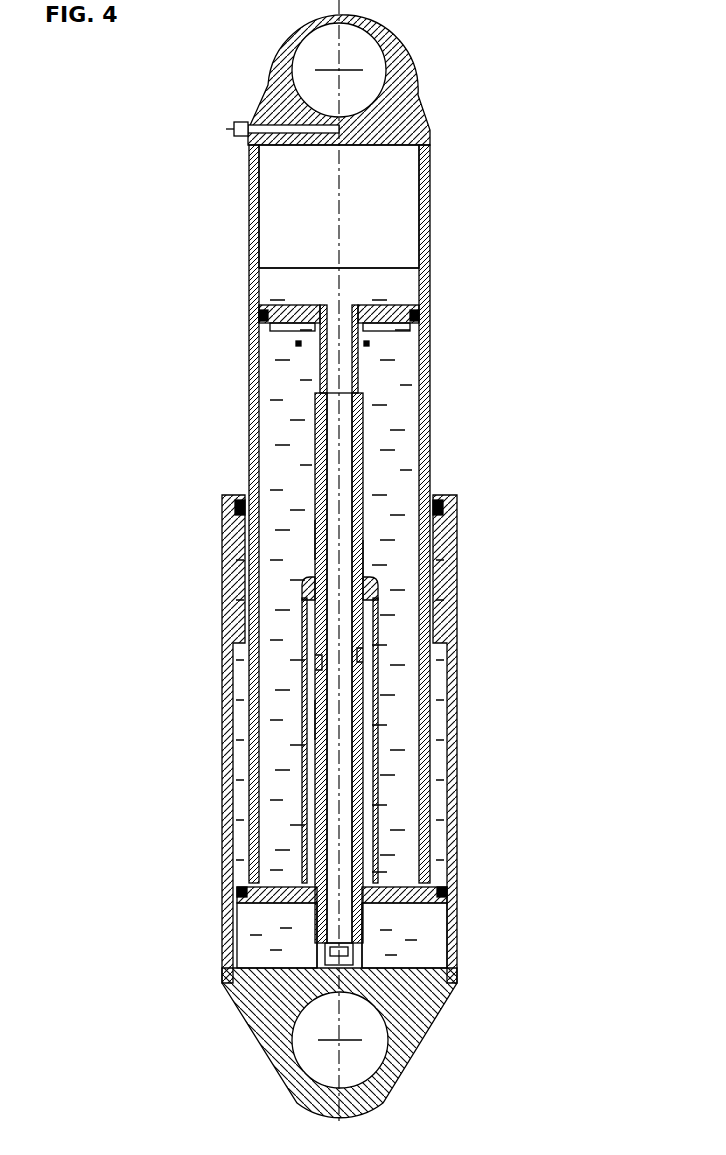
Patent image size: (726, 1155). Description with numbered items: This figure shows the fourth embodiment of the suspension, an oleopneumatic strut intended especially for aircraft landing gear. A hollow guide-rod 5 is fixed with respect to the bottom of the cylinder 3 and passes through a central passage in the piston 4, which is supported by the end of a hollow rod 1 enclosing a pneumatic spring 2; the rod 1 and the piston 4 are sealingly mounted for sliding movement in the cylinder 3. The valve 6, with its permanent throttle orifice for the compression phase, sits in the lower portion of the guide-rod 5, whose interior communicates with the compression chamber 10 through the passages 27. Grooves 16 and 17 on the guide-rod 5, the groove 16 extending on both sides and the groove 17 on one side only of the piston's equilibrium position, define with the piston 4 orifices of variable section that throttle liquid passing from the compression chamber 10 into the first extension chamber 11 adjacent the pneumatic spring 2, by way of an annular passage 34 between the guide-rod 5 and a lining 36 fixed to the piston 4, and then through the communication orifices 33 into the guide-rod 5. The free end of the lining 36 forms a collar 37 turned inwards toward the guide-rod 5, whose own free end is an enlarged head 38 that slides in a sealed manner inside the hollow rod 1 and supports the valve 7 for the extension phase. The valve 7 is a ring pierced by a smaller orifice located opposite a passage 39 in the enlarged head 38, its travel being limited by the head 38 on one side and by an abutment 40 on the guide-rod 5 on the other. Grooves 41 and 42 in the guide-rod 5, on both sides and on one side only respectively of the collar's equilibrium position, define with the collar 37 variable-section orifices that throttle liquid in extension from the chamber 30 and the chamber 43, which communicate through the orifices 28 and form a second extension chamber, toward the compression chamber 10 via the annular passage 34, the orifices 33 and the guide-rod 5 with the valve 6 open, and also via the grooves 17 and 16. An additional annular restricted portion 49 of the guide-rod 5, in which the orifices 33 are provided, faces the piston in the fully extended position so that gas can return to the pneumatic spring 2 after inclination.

The hollow rod 1 is at (430, 408).
The pneumatic spring 2 is at (366, 207).
The cylinder 3 is at (452, 533).
The piston 4 is at (445, 890).
The hollow guide-rod 5 is at (357, 452).
The valve 6 is at (347, 930).
The valve 7 is at (292, 350).
The compression chamber 10 is at (415, 960).
The first extension chamber 11 is at (382, 288).
The groove 16 is at (325, 925).
The groove 17 is at (365, 930).
The passages 27 is at (330, 955).
The orifices 28 is at (258, 877).
The chamber 30 is at (240, 793).
The communication orifices 33 is at (322, 660).
The annular passage 34 is at (320, 715).
The lining 36 is at (305, 762).
The collar 37 is at (305, 583).
The enlarged head 38 is at (305, 300).
The passage 39 is at (290, 308).
The abutment 40 is at (395, 352).
The groove 41 is at (368, 560).
The groove 42 is at (320, 532).
The chamber 43 is at (300, 440).
The annular restricted portion 49 is at (360, 655).